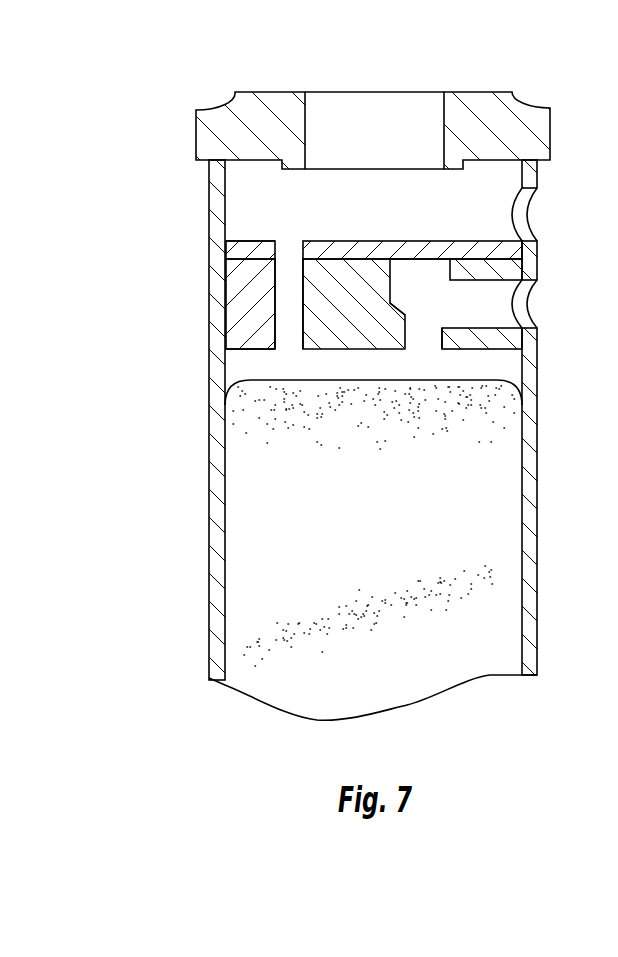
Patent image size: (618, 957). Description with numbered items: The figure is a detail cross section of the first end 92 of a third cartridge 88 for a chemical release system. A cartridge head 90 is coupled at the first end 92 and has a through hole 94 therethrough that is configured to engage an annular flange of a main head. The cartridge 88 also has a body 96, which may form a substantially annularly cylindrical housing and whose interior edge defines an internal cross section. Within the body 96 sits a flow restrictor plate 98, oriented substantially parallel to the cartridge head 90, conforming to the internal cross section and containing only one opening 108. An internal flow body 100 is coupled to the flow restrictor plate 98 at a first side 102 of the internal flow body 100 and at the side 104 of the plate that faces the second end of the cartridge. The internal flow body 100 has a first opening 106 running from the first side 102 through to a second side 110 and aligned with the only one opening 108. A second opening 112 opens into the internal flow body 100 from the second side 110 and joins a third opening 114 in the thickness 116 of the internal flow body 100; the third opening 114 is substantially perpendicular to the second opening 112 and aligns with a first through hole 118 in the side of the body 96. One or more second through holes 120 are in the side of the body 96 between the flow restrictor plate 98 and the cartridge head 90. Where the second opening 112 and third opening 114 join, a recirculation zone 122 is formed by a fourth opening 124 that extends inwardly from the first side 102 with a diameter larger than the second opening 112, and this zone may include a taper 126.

The third cartridge 88 is at (143, 101).
The cartridge head 90 is at (528, 120).
The first end 92 is at (212, 180).
The through hole 94 is at (418, 112).
The body 96 is at (216, 386).
The flow restrictor plate 98 is at (235, 248).
The internal flow body 100 is at (240, 300).
The first side 102 is at (508, 262).
The side 104 is at (500, 259).
The first opening 106 is at (287, 317).
The only one opening 108 is at (272, 241).
The second side 110 is at (265, 348).
The second opening 112 is at (423, 333).
The third opening 114 is at (470, 303).
The thickness 116 is at (330, 322).
The first through hole 118 is at (522, 303).
The second through hole 120 is at (522, 215).
The recirculation zone 122 is at (407, 300).
The fourth opening 124 is at (410, 262).
The taper 126 is at (395, 307).